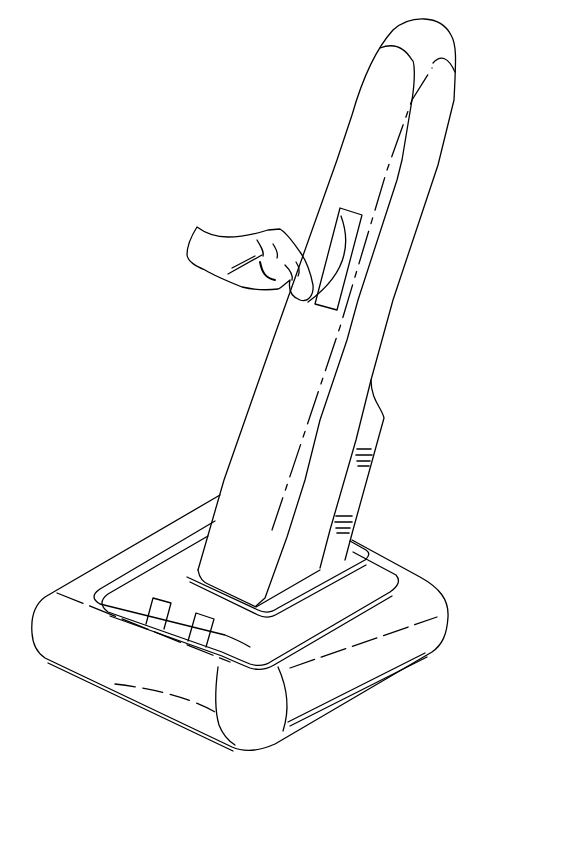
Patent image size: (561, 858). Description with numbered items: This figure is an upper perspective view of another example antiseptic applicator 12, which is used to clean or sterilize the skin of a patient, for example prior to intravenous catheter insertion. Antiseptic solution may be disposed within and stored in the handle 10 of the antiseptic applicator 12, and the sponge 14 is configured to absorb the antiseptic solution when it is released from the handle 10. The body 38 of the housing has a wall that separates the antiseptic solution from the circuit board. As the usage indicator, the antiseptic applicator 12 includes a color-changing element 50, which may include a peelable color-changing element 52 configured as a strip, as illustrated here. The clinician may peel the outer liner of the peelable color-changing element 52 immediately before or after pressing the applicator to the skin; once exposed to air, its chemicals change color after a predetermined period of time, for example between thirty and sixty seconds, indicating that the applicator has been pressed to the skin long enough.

The handle 10 is at (436, 198).
The antiseptic applicator 12 is at (206, 63).
The sponge 14 is at (423, 590).
The body 38 is at (432, 137).
The color-changing element 50 is at (349, 230).
The peelable color-changing element 52 is at (338, 258).